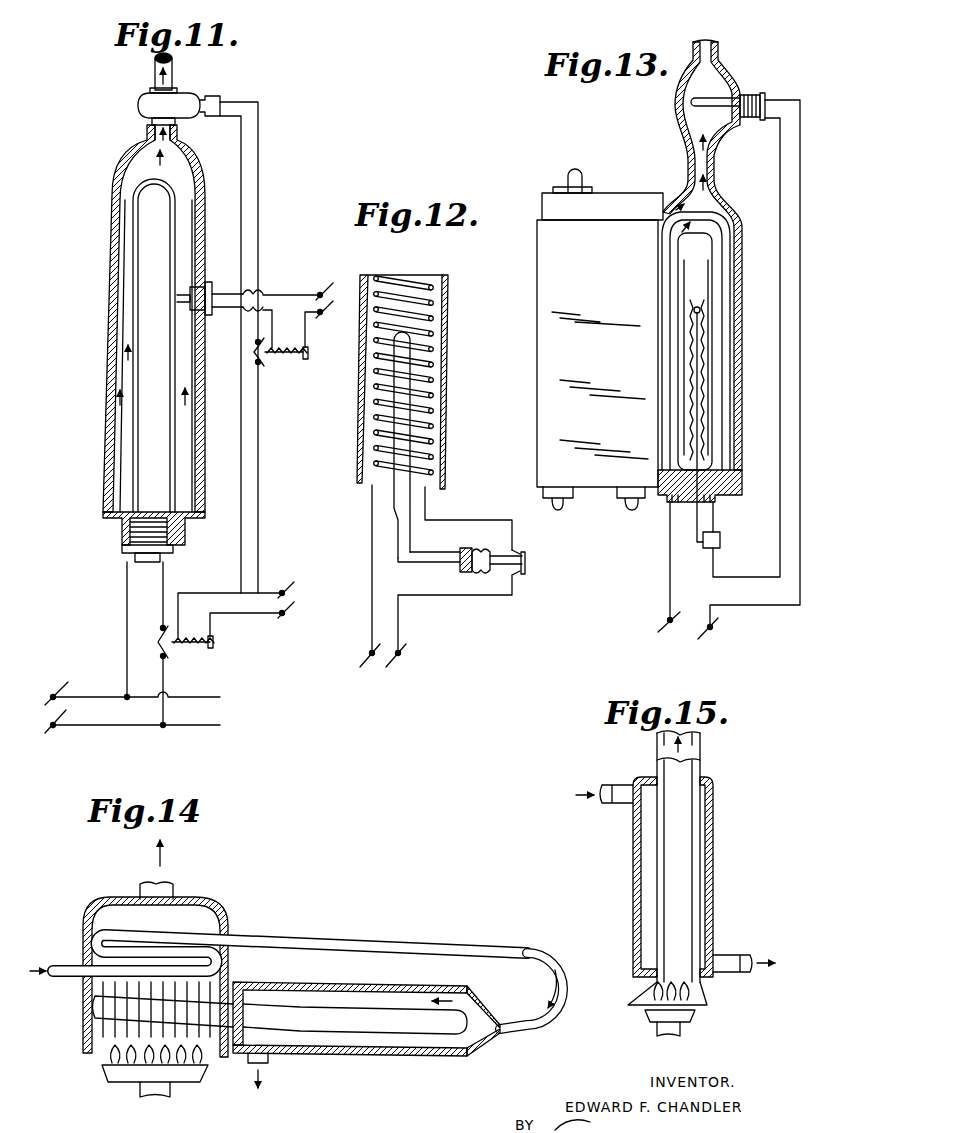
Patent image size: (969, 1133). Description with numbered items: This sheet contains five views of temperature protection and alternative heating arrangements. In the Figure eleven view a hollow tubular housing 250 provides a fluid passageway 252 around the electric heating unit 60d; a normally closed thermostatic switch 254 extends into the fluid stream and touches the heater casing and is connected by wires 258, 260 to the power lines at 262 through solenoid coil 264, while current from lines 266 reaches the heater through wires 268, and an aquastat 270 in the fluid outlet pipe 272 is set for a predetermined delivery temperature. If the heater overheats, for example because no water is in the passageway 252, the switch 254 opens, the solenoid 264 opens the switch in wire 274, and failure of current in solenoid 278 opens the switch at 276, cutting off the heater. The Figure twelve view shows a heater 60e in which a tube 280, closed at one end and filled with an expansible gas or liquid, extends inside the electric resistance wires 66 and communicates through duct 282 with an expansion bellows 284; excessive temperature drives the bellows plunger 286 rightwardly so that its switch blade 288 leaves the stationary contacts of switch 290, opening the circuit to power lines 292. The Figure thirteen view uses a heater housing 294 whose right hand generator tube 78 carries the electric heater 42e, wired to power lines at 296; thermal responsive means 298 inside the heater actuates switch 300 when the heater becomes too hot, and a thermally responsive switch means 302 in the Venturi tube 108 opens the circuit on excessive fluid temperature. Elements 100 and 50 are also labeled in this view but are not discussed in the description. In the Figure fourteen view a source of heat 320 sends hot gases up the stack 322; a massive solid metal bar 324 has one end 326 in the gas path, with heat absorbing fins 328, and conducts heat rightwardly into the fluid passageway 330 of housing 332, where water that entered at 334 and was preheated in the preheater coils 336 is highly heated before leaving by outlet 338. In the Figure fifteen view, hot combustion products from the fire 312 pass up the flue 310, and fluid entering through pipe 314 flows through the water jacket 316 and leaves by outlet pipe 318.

In FIG. 11, the fluid outlet pipe 272 is at (152, 68).
In FIG. 11, the aquastat 270 is at (186, 95).
In FIG. 11, the electric heating unit 60d is at (138, 230).
In FIG. 11, the fluid passageway 252 is at (124, 262).
In FIG. 11, the hollow tubular housing 250 is at (110, 355).
In FIG. 11, the thermostatic switch 254 is at (197, 287).
In FIG. 11, the wire 258 is at (210, 290).
In FIG. 11, the wire 260 is at (228, 308).
In FIG. 11, the power lines 262 is at (318, 290).
In FIG. 11, the solenoid coil 264 is at (288, 362).
In FIG. 11, the wire 274 is at (259, 406).
In FIG. 11, the wires 268 is at (128, 606).
In FIG. 11, the lines 266 is at (38, 708).
In FIG. 11, the switch 276 is at (170, 658).
In FIG. 11, the solenoid 278 is at (208, 650).
In FIG. 12, the electric resistance wires 66 is at (432, 345).
In FIG. 12, the electric heater 60e is at (447, 393).
In FIG. 12, the tube 280 is at (411, 446).
In FIG. 12, the duct 282 is at (426, 551).
In FIG. 12, the expansion bellows 284 is at (484, 573).
In FIG. 12, the bellows plunger 286 is at (499, 553).
In FIG. 12, the switch blade 288 is at (527, 559).
In FIG. 12, the switch 290 is at (514, 546).
In FIG. 12, the power lines 292 is at (404, 648).
In FIG. 13, the thermally responsive switch means 302 is at (730, 85).
In FIG. 13, the fitting 100 is at (583, 182).
In FIG. 13, the Venturi tube 108 is at (722, 188).
In FIG. 13, the heater housing 294 is at (538, 251).
In FIG. 13, the right hand generator tube 78 is at (666, 264).
In FIG. 13, the thermal responsive means 298 is at (701, 310).
In FIG. 13, the electric heater 42e is at (712, 388).
In FIG. 13, the connectors 50 is at (570, 498).
In FIG. 13, the switch 300 is at (721, 534).
In FIG. 13, the power lines 296 is at (662, 622).
In FIG. 14, the stack 322 is at (176, 888).
In FIG. 14, the preheater coils 336 is at (195, 930).
In FIG. 14, the cool water inlet 334 is at (66, 960).
In FIG. 14, the housing 332 is at (377, 984).
In FIG. 14, the fluid passageway 330 is at (398, 1048).
In FIG. 14, the massive solid metal bar 324 is at (292, 1030).
In FIG. 14, the end of bar 326 is at (98, 1012).
In FIG. 14, the heat absorbing fins 328 is at (100, 987).
In FIG. 14, the source of heat 320 is at (103, 1076).
In FIG. 14, the outlet 338 is at (264, 1068).
In FIG. 15, the flue 310 is at (701, 760).
In FIG. 15, the water jacket 316 is at (714, 884).
In FIG. 15, the pipe 314 is at (614, 784).
In FIG. 15, the outlet pipe 318 is at (740, 955).
In FIG. 15, the fire 312 is at (693, 1020).